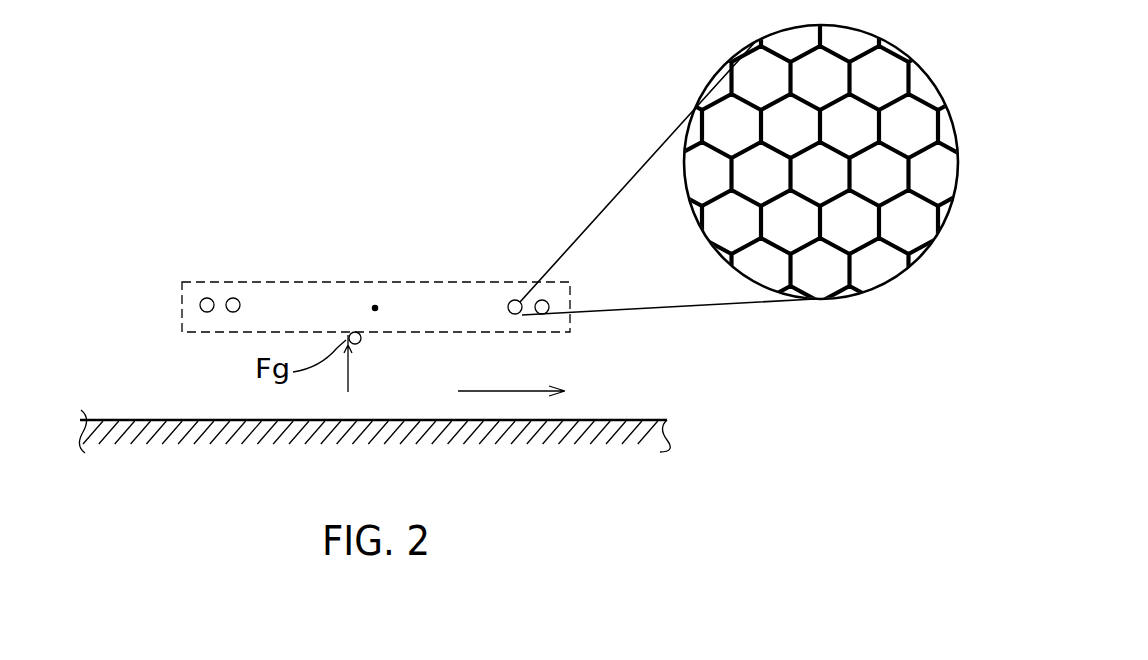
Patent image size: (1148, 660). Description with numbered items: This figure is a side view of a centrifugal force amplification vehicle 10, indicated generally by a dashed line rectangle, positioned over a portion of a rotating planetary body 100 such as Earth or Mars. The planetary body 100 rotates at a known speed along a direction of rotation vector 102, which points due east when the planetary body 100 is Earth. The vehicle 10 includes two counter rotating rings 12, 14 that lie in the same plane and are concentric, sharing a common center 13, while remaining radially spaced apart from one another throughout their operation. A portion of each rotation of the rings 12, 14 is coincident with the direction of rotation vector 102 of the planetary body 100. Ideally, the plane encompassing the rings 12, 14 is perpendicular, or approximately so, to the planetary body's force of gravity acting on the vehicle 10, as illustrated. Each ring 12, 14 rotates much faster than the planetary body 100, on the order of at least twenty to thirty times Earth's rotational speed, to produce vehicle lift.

The centrifugal force amplification vehicle 10 is at (107, 243).
The ring 12 is at (182, 297).
The common center 13 is at (375, 305).
The ring 14 is at (221, 284).
The rotating planetary body 100 is at (638, 422).
The direction of rotation vector 102 is at (515, 390).